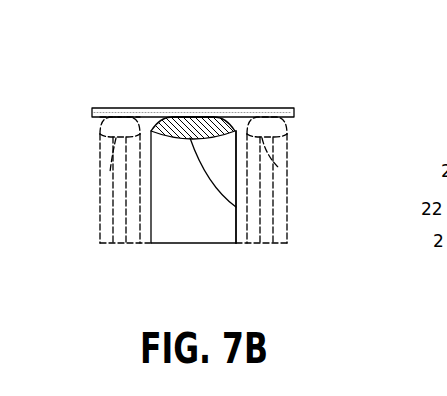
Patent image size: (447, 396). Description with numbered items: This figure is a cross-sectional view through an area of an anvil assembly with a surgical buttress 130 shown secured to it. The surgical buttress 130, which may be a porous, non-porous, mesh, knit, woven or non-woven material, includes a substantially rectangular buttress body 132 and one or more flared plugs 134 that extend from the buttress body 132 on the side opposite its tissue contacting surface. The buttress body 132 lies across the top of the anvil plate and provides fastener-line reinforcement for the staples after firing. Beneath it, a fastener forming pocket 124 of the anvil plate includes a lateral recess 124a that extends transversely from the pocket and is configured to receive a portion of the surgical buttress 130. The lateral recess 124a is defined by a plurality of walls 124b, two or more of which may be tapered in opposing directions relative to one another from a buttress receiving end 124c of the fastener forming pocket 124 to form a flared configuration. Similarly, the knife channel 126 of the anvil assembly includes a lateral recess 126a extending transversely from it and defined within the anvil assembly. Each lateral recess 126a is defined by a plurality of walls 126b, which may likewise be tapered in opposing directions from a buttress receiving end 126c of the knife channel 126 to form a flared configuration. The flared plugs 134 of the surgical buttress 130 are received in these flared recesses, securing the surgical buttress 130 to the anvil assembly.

The surgical buttress 130 is at (184, 155).
The buttress body 132 is at (147, 107).
The fastener forming pocket 124 is at (81, 144).
The lateral recess 124a is at (103, 150).
The walls 124b is at (102, 127).
The buttress receiving end 124c is at (100, 107).
The knife channel 126 is at (193, 159).
The lateral recess 126a is at (235, 114).
The walls 126b is at (172, 122).
The buttress receiving end 126c is at (210, 117).
The flared plug 134 is at (236, 207).